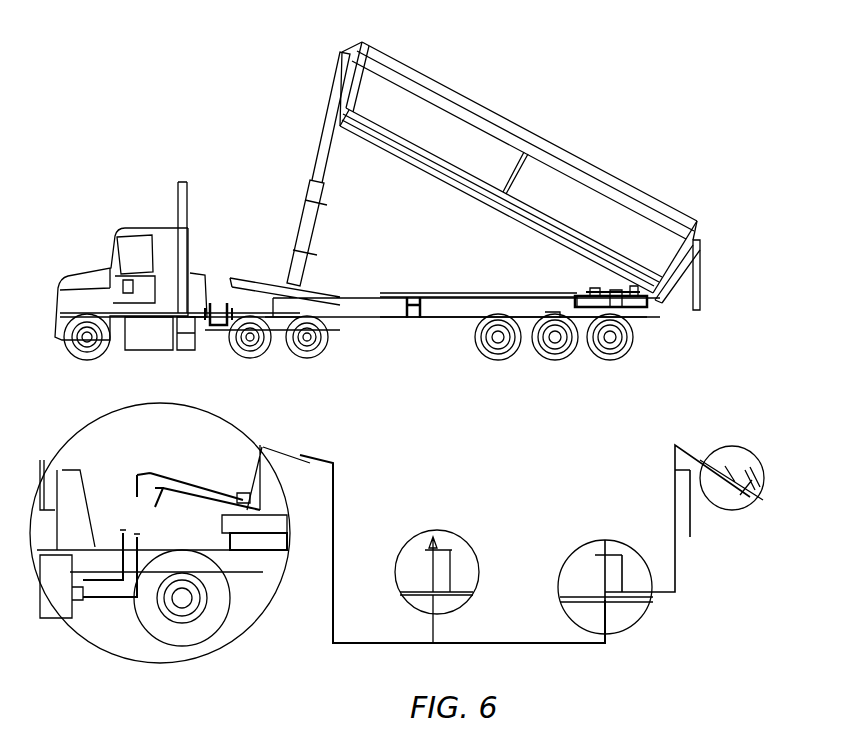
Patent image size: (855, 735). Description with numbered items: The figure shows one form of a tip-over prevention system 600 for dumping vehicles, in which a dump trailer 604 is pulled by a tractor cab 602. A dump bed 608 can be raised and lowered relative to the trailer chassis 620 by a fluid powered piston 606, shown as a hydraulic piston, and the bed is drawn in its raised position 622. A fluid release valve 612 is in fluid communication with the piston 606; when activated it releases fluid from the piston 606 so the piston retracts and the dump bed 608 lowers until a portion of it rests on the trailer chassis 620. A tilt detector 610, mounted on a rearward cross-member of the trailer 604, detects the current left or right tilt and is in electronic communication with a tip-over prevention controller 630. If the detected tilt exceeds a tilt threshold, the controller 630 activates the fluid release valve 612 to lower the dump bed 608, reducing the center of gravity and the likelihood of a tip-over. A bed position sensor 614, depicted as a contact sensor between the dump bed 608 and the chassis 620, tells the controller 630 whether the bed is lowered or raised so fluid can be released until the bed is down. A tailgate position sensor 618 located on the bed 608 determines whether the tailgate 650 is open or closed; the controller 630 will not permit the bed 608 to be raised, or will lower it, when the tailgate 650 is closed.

The tip-over prevention system 600 is at (600, 96).
The tractor cab 602 is at (118, 230).
The dump trailer 604 is at (212, 128).
The fluid powered piston 606 is at (305, 222).
The dump bed 608 is at (425, 118).
The tilt detector 610 is at (583, 318).
The fluid release valve 612 is at (275, 325).
The bed position sensor 614 is at (588, 293).
The tailgate position sensor 618 is at (702, 302).
The trailer chassis 620 is at (442, 308).
The raised position 622 is at (655, 160).
The tip-over prevention controller 630 is at (540, 318).
The tailgate 650 is at (722, 258).